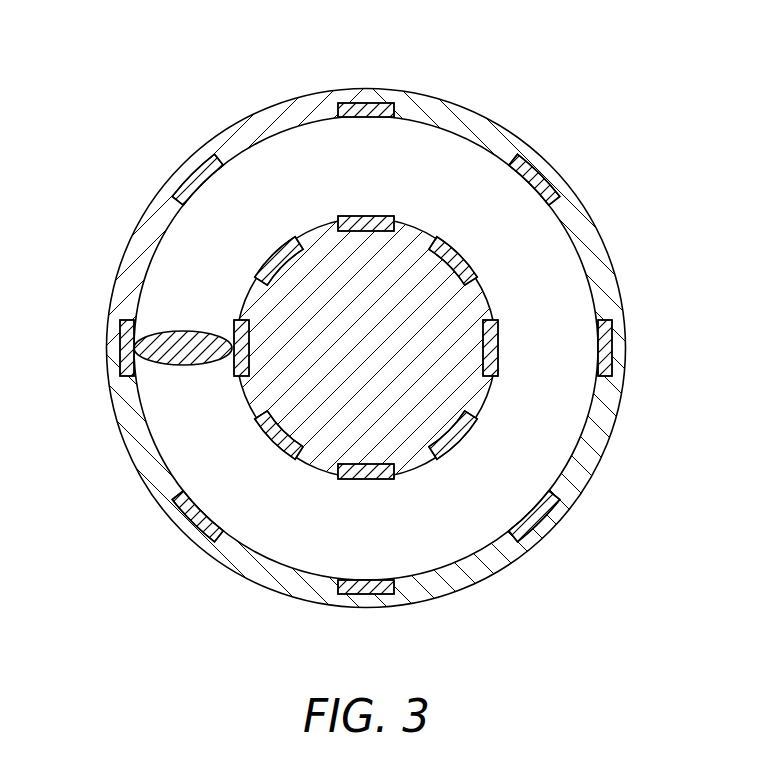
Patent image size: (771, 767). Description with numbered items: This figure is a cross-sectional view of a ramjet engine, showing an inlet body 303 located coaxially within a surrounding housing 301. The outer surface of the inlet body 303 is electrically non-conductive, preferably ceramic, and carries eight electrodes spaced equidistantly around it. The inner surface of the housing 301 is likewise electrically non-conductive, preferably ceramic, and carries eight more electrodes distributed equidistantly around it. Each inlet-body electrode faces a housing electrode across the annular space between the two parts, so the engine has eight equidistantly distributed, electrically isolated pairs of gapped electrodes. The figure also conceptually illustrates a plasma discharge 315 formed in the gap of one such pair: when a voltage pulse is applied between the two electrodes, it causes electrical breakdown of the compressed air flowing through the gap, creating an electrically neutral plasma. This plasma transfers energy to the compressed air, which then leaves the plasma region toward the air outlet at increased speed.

The housing 301 is at (472, 113).
The inlet body 303 is at (410, 226).
The plasma discharge 315 is at (184, 366).